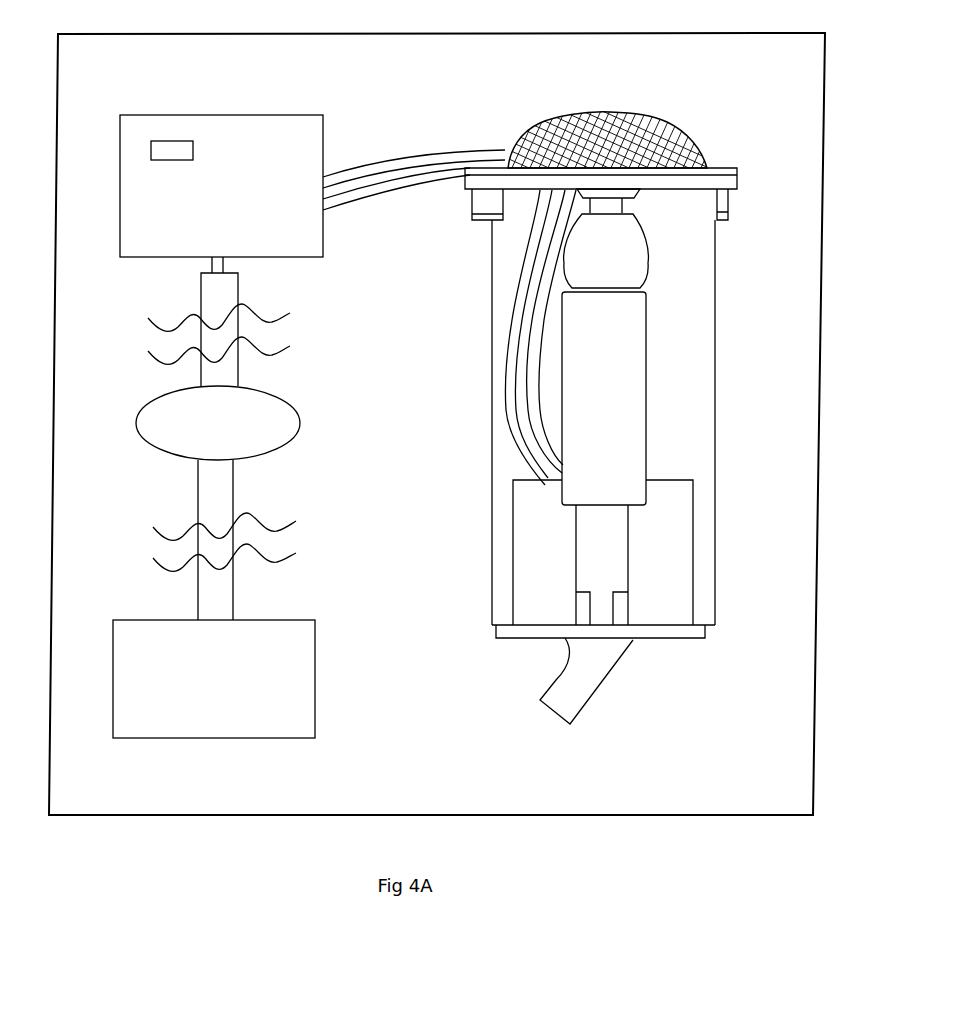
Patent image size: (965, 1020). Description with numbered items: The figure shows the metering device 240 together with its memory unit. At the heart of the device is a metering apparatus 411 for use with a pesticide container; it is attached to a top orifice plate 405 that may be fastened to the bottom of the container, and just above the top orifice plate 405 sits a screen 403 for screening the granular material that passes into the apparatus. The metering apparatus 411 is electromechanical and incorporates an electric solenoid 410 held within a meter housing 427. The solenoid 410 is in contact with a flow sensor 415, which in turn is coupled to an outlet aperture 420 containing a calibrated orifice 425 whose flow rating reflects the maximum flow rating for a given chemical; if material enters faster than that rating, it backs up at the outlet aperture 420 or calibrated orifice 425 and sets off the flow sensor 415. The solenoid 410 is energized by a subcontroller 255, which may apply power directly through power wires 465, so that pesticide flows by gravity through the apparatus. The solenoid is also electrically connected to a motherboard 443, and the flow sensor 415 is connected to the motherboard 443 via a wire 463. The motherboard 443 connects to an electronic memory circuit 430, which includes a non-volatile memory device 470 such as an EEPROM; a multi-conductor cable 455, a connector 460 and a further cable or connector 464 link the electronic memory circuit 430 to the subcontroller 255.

The metering device 240 is at (822, 383).
The subcontroller 255 is at (224, 721).
The screen 403 is at (595, 107).
The top orifice plate 405 is at (745, 183).
The electric solenoid 410 is at (627, 368).
The metering apparatus 411 is at (738, 130).
The flow sensor 415 is at (540, 547).
The outlet aperture 420 is at (567, 705).
The calibrated orifice 425 is at (620, 610).
The meter housing 427 is at (716, 460).
The electronic memory circuit 430 is at (262, 128).
The motherboard 443 is at (493, 230).
The multi-conductor cable 455 is at (208, 289).
The connector 460 is at (130, 429).
The wire 463 is at (523, 367).
The cable or connector 464 is at (222, 596).
The power wires 465 is at (548, 289).
The non-volatile memory device 470 is at (173, 148).